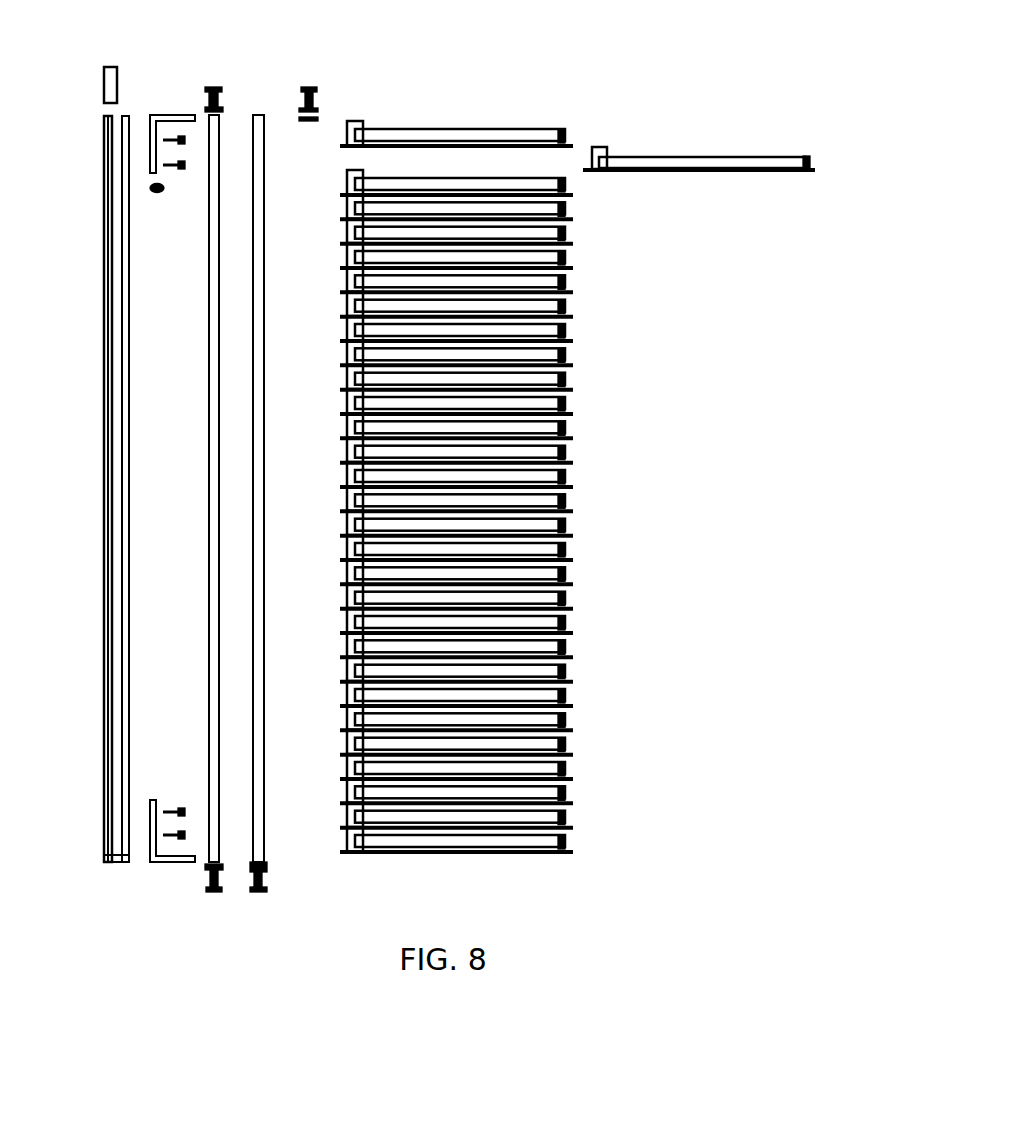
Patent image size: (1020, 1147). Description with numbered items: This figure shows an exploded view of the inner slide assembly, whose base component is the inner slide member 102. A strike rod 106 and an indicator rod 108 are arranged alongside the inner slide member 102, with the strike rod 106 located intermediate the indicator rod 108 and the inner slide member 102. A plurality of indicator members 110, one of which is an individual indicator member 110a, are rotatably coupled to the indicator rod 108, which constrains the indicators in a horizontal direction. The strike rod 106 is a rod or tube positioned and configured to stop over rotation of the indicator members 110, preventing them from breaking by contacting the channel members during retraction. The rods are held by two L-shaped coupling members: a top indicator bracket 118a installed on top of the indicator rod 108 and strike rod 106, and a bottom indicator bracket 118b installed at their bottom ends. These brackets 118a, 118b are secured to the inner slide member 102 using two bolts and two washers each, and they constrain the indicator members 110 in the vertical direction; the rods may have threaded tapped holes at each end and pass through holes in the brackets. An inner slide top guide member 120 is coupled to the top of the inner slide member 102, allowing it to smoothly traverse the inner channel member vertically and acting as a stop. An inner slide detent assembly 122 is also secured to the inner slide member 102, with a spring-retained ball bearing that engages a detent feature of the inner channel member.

The inner slide member 102 is at (100, 249).
The strike rod 106 is at (204, 467).
The indicator rod 108 is at (282, 518).
The indicator members 110 is at (758, 95).
The indicator member 110a is at (522, 106).
The top indicator bracket 118a is at (175, 100).
The bottom indicator bracket 118b is at (170, 892).
The inner slide top guide member 120 is at (89, 58).
The inner slide detent assembly 122 is at (153, 206).